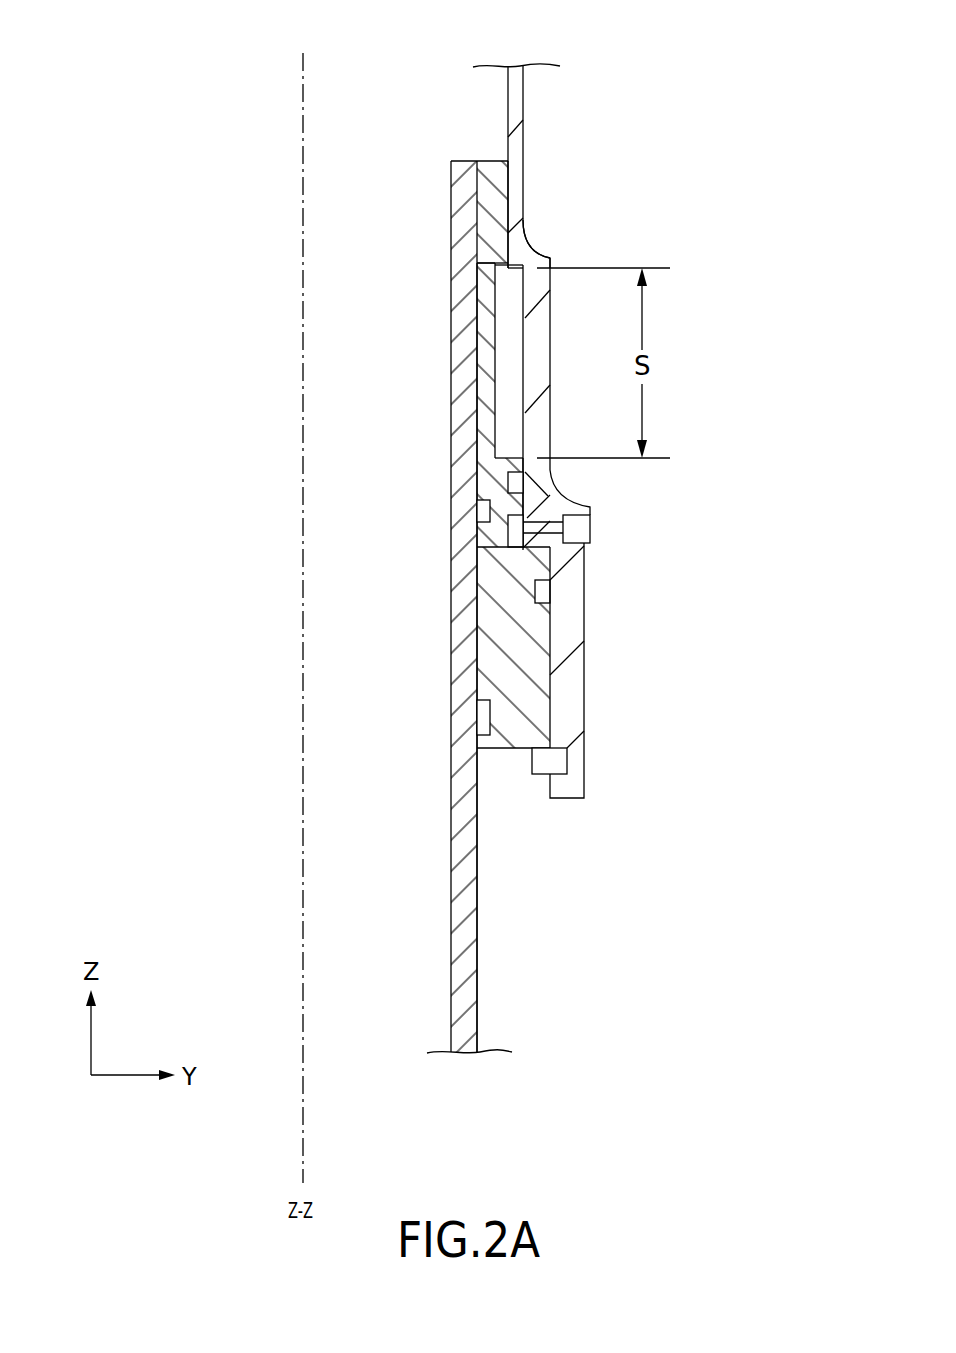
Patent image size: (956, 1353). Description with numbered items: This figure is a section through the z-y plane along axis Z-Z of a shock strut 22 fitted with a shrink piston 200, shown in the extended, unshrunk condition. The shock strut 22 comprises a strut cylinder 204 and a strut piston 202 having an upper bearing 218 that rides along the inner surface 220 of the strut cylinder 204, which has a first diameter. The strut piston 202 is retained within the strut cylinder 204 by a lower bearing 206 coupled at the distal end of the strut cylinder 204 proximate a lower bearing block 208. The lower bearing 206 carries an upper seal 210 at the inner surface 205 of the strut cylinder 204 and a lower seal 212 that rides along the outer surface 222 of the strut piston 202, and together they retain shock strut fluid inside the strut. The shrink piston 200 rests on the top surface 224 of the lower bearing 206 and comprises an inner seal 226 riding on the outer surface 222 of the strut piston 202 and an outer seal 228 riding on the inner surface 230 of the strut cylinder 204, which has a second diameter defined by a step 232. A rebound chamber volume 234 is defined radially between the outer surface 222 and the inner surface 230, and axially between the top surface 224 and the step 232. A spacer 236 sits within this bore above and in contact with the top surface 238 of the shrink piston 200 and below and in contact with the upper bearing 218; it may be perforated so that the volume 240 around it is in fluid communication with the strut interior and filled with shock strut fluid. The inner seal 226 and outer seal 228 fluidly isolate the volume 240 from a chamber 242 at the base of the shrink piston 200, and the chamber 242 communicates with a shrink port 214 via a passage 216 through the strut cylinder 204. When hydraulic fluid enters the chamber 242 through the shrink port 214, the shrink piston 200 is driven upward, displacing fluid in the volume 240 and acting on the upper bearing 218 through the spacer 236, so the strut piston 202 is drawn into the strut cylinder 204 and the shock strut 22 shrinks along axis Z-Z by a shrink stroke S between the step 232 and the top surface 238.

The shock strut 22 is at (685, 62).
The shrink piston 200 is at (487, 477).
The strut piston 202 is at (470, 877).
The strut cylinder 204 is at (580, 622).
The inner surface 205 is at (550, 650).
The lower bearing 206 is at (542, 703).
The lower bearing block 208 is at (557, 762).
The upper seal 210 is at (540, 593).
The lower seal 212 is at (482, 715).
The shrink port 214 is at (583, 528).
The passage 216 is at (555, 530).
The upper bearing 218 is at (488, 204).
The inner surface 220 is at (508, 102).
The outer surface 222 is at (478, 968).
The top surface 224 is at (487, 553).
The inner seal 226 is at (482, 512).
The outer seal 228 is at (517, 477).
The inner surface 230 is at (527, 380).
The step 232 is at (515, 267).
The rebound chamber volume 234 is at (473, 307).
The spacer 236 is at (490, 350).
The top surface 238 is at (487, 452).
The volume 240 is at (517, 328).
The chamber 242 is at (515, 532).